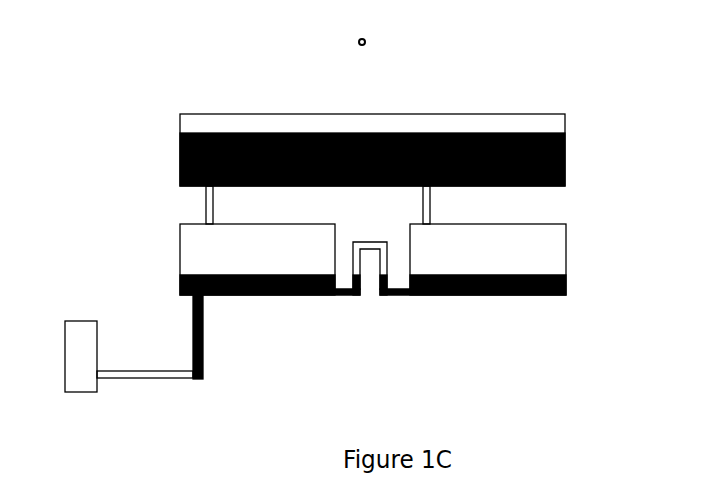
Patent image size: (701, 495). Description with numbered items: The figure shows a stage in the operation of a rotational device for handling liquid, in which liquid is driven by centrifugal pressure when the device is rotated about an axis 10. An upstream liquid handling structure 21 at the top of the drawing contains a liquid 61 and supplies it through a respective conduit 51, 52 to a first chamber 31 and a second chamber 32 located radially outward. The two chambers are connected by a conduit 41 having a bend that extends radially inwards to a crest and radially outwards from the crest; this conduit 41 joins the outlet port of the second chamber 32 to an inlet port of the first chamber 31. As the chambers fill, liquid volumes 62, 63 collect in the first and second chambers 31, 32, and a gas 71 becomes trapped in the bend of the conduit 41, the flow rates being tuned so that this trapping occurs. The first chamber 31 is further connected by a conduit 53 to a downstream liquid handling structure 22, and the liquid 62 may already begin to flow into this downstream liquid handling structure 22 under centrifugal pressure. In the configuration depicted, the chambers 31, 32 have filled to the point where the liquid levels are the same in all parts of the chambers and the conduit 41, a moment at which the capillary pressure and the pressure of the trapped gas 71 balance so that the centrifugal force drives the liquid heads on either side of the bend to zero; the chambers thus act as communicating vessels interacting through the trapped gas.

The axis 10 is at (380, 42).
The upstream liquid handling structure 21 is at (372, 134).
The liquid 61 is at (357, 159).
The conduit 51 is at (227, 205).
The conduit 52 is at (440, 205).
The first chamber 31 is at (257, 246).
The second chamber 32 is at (488, 246).
The liquid volume 62 is at (254, 279).
The liquid volume 63 is at (487, 282).
The conduit 41 is at (370, 257).
The gas 71 is at (371, 257).
The conduit 53 is at (211, 337).
The downstream liquid handling structure 22 is at (110, 356).